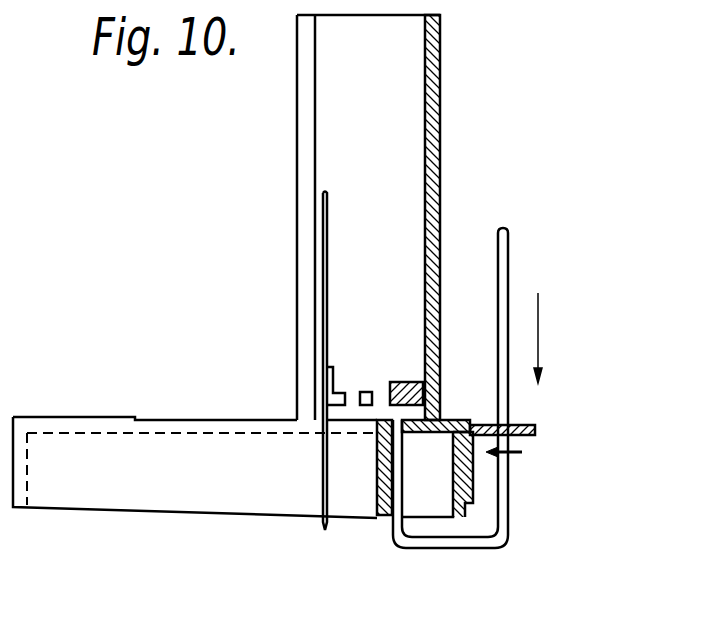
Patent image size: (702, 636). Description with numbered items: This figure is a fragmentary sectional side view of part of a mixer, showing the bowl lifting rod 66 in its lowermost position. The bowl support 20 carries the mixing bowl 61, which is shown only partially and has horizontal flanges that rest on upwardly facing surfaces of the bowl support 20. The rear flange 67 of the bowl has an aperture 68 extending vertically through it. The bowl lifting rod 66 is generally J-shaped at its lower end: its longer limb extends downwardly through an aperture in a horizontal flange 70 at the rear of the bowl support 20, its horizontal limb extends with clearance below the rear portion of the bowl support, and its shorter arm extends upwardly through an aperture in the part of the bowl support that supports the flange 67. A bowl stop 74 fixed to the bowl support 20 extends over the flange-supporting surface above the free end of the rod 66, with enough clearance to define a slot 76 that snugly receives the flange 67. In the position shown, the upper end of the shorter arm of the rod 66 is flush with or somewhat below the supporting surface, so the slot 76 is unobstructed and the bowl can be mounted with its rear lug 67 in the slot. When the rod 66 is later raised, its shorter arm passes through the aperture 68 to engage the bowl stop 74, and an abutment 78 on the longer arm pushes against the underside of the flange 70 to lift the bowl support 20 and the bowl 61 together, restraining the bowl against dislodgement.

The bowl support 20 is at (443, 121).
The mixing bowl 61 is at (325, 262).
The bowl lifting rod 66 is at (505, 248).
The flange 67 is at (372, 392).
The aperture 68 is at (352, 405).
The horizontal flange 70 is at (536, 432).
The bowl stop 74 is at (425, 392).
The slot 76 is at (410, 412).
The abutment 78 is at (522, 452).